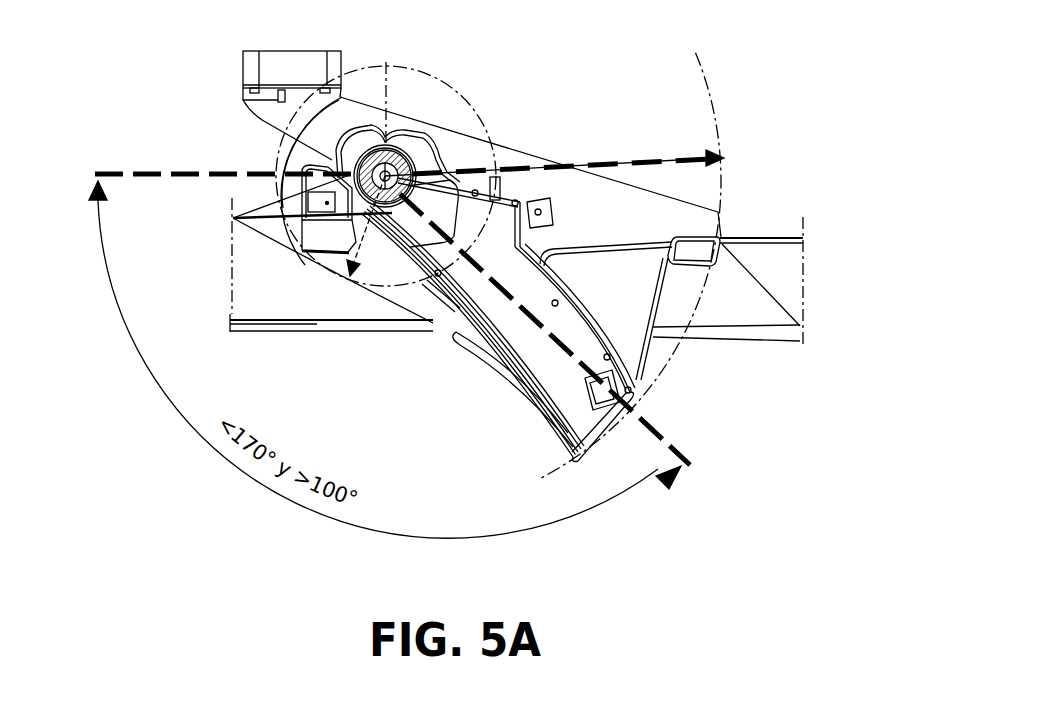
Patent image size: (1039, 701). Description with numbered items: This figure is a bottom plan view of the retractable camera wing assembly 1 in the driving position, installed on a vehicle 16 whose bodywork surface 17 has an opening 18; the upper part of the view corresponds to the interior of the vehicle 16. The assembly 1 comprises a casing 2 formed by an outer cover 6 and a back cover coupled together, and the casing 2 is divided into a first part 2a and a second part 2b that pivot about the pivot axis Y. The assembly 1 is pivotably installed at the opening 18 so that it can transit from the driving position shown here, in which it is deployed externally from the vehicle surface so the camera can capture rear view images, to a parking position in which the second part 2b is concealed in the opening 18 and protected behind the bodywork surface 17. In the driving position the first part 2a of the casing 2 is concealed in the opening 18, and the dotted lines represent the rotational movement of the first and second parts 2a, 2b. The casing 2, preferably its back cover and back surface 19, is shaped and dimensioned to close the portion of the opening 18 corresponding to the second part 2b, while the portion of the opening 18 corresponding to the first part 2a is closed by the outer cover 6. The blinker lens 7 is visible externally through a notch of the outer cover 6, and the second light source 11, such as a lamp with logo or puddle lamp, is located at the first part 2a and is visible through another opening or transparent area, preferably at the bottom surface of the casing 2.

The retractable camera wing assembly 1 is at (560, 110).
The casing 2 is at (313, 148).
The first part of the casing 2a is at (233, 218).
The second part of the casing 2b is at (560, 372).
The outer cover 6 is at (442, 312).
The blinker lens 7 is at (522, 398).
The second light source 11 is at (318, 203).
The vehicle 16 is at (160, 133).
The bodywork surface 17 is at (743, 293).
The opening 18 is at (717, 233).
The back surface 19 is at (612, 165).
The pivot axis Y is at (410, 148).